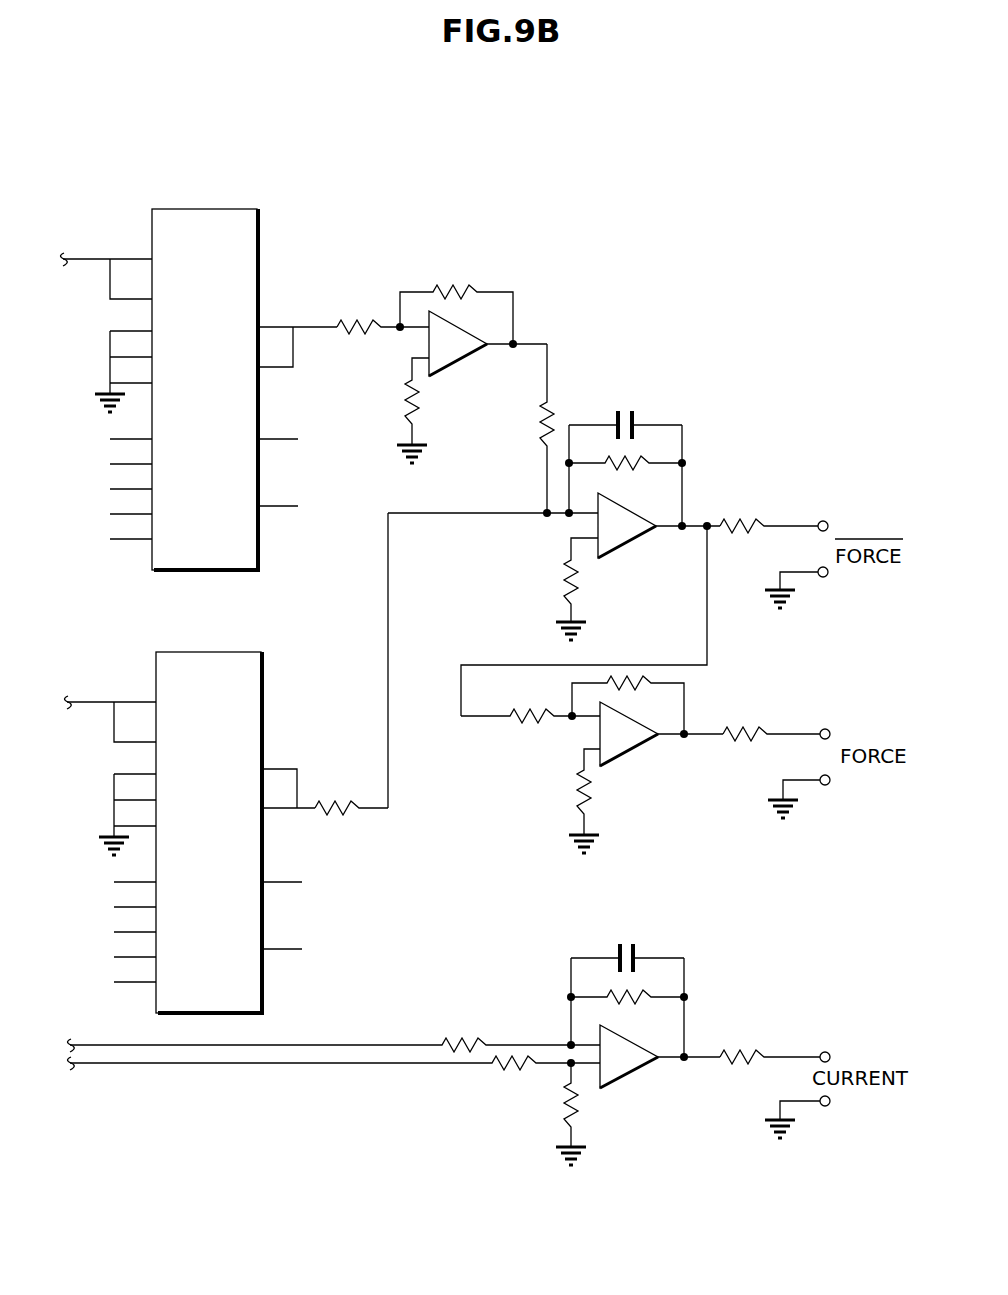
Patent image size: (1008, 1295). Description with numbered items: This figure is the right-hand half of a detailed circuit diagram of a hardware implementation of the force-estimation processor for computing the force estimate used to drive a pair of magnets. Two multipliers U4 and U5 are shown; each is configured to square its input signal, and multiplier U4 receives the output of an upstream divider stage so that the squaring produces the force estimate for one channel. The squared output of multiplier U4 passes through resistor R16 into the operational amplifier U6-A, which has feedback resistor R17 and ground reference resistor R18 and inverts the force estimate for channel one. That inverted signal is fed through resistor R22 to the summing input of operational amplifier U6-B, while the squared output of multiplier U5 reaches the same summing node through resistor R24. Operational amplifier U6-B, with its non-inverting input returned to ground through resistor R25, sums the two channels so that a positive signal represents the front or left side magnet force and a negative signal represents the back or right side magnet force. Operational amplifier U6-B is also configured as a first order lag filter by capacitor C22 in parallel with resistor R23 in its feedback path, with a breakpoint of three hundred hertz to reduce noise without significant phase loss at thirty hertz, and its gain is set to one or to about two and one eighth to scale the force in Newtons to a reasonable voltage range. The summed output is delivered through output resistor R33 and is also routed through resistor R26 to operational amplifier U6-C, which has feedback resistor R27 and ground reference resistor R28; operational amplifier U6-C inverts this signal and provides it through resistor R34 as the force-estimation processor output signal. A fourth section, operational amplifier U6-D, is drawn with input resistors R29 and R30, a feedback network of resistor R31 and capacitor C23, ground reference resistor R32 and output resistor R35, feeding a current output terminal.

The AD534 multiplier U4 is at (199, 378).
The AD534 multiplier U5 is at (190, 821).
The operational amplifier U6-A is at (488, 353).
The operational amplifier U6-B is at (590, 604).
The operational amplifier U6-C is at (661, 752).
The operational amplifier U6-D is at (660, 1063).
The resistor R16 is at (383, 314).
The feedback resistor R17 is at (456, 301).
The resistor R18 is at (395, 410).
The resistor R22 is at (524, 428).
The resistor R23 is at (625, 475).
The resistor R24 is at (351, 796).
The resistor R25 is at (558, 589).
The resistor R26 is at (530, 704).
The feedback resistor R27 is at (628, 705).
The resistor R28 is at (566, 801).
The resistor R29 is at (334, 1031).
The resistor R30 is at (334, 1077).
The feedback resistor R31 is at (627, 1007).
The resistor R32 is at (591, 1114).
The output resistor R33 is at (774, 514).
The output resistor R34 is at (776, 722).
The output resistor R35 is at (775, 1045).
The capacitor C22 is at (625, 411).
The feedback capacitor C23 is at (627, 945).